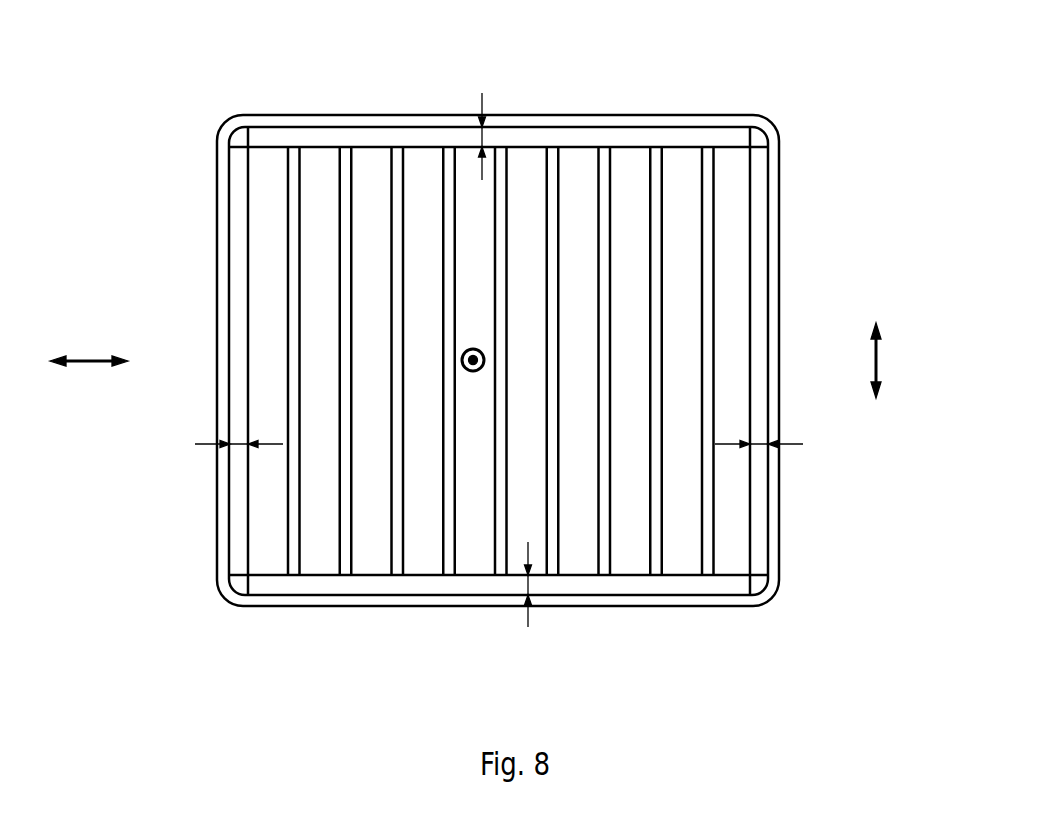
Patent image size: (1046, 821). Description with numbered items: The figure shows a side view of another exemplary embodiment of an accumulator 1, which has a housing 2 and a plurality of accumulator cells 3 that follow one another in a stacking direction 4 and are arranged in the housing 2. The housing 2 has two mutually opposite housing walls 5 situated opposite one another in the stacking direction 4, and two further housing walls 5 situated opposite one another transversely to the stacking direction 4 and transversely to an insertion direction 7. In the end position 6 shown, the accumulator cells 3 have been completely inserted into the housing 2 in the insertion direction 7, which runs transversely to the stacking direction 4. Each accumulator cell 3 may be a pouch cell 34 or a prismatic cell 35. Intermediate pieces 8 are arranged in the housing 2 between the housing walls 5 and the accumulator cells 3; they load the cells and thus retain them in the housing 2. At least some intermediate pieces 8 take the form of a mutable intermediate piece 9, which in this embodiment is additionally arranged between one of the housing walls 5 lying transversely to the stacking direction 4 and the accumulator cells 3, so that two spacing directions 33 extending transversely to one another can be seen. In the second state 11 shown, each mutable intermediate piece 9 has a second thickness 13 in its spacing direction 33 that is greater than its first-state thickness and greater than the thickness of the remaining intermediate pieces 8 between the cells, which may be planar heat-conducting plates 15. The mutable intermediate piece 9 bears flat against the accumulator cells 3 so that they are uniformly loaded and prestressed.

The accumulator 1 is at (836, 142).
The housing 2 is at (702, 103).
The accumulator cell 3 is at (437, 160).
The stacking direction 4 is at (88, 358).
The housing wall 5 is at (660, 122).
The end position 6 is at (501, 404).
The insertion direction 7 is at (472, 347).
The intermediate piece 8 is at (548, 137).
The mutable intermediate piece 9 is at (760, 477).
The second state 11 is at (498, 361).
The second thickness 13 is at (482, 135).
The planar heat-conducting plate 15 is at (397, 562).
The spacing direction 33 is at (878, 358).
The pouch cell 34 is at (501, 404).
The prismatic cell 35 is at (501, 404).